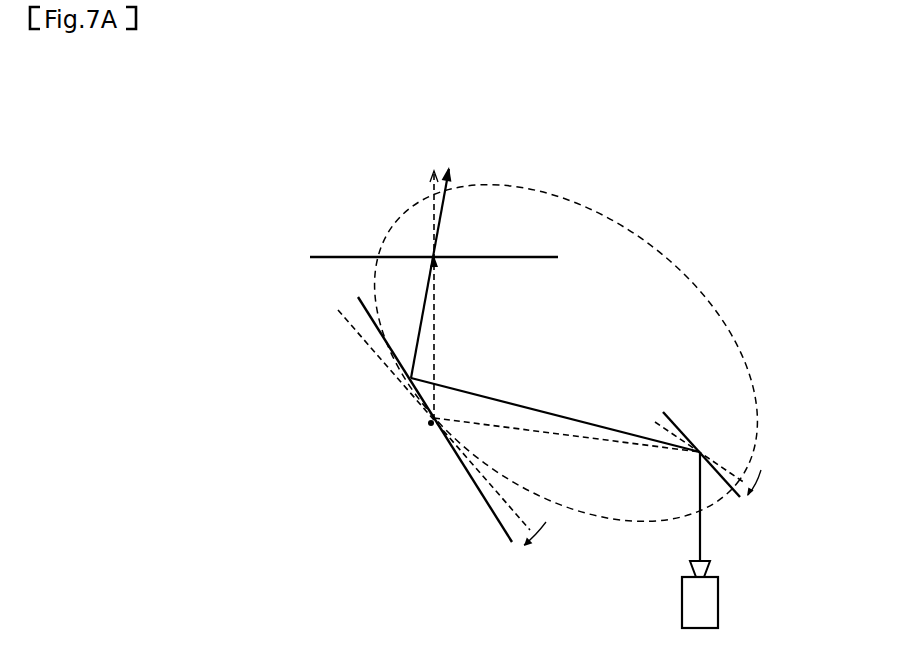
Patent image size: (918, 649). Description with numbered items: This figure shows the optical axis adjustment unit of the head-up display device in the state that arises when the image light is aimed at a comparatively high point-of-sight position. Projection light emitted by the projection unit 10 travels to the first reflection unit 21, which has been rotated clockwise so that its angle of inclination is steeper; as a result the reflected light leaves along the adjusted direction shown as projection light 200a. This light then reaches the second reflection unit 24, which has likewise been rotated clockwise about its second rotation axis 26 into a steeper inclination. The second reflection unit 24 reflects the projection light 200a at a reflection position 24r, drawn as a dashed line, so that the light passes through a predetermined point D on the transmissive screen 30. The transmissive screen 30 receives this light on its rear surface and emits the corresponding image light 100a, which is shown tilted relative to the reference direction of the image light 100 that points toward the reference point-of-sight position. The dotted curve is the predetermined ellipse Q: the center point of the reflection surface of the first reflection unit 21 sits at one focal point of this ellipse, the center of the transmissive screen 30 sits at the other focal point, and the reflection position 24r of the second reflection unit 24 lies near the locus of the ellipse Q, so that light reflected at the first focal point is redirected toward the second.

The projection unit 10 is at (707, 592).
The first reflection unit 21 is at (739, 494).
The second reflection unit 24 is at (512, 542).
The reflection position 24r is at (398, 377).
The second rotation axis 26 is at (429, 426).
The transmissive screen 30 is at (332, 256).
The image light 100 is at (432, 164).
The image light 100a is at (455, 182).
The projection light 200a is at (582, 418).
The predetermined ellipse Q is at (685, 272).